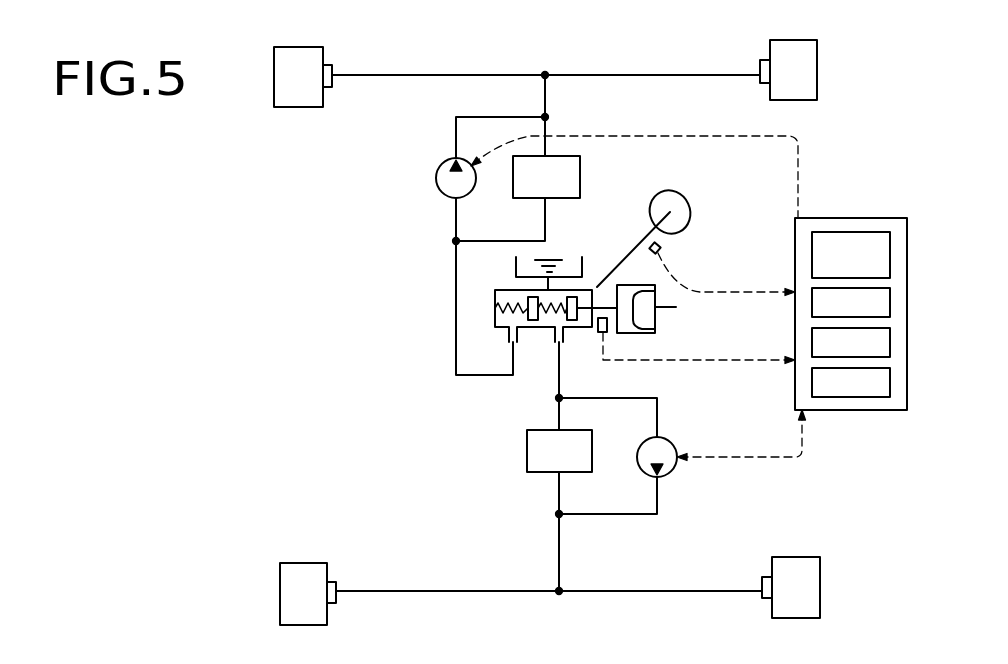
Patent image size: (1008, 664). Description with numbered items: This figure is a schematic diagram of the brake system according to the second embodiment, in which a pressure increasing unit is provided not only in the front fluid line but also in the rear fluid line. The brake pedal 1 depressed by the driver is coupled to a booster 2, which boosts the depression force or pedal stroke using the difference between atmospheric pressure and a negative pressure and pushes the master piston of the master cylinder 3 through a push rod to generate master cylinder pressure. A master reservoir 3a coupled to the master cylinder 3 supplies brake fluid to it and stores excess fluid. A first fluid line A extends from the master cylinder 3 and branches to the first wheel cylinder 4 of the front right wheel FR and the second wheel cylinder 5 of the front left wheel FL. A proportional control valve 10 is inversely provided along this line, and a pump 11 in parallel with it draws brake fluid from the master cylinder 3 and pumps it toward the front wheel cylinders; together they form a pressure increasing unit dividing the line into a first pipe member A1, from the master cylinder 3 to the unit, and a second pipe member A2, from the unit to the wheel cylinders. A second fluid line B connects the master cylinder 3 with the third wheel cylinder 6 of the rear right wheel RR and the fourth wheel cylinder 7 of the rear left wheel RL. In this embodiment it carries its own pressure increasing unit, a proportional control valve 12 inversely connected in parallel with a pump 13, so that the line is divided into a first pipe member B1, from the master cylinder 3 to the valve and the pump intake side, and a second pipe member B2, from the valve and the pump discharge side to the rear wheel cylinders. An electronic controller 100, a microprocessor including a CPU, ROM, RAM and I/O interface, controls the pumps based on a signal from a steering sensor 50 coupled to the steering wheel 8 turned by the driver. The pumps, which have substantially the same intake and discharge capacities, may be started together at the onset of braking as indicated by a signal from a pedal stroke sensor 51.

The brake pedal 1 is at (645, 299).
The booster 2 is at (640, 333).
The master cylinder 3 is at (536, 341).
The master reservoir 3a is at (576, 262).
The first wheel cylinder 4 is at (758, 63).
The second wheel cylinder 5 is at (333, 70).
The third wheel cylinder 6 is at (760, 597).
The fourth wheel cylinder 7 is at (337, 597).
The steering wheel 8 is at (687, 203).
The proportional control valve 10 is at (580, 177).
The pump 11 is at (438, 189).
The proportional control valve 12 is at (546, 473).
The pump 13 is at (675, 474).
The steering sensor 50 is at (663, 250).
The pedal stroke sensor 51 is at (600, 338).
The electronic controller 100 is at (866, 218).
The first fluid line A is at (546, 70).
The first pipe member A1 is at (455, 266).
The second pipe member A2 is at (480, 73).
The second fluid line B is at (621, 526).
The first pipe member B1 is at (553, 400).
The second pipe member B2 is at (561, 553).